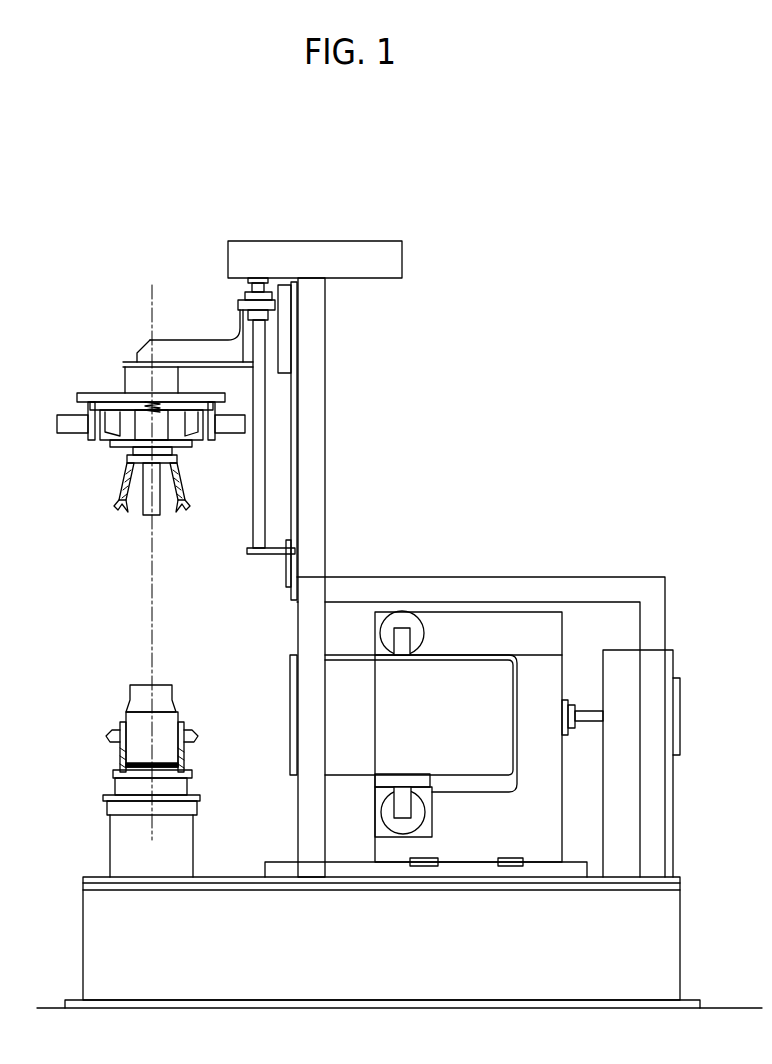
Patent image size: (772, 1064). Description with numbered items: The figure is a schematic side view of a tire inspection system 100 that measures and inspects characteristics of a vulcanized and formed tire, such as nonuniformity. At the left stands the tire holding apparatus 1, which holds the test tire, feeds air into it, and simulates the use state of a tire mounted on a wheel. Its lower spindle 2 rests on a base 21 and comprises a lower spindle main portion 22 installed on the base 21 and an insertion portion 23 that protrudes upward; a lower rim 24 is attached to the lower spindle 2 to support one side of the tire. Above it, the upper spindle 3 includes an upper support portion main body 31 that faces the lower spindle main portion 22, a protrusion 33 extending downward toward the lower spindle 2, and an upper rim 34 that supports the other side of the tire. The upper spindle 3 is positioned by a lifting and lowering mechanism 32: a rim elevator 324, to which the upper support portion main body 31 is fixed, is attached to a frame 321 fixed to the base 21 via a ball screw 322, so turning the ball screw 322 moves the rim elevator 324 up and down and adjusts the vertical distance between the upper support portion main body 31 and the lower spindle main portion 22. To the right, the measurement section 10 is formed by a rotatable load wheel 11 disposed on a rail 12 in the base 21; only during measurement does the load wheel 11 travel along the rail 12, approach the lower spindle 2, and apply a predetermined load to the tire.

The tire inspection system 100 is at (573, 428).
The tire holding apparatus 1 is at (60, 410).
The lower spindle 2 is at (157, 699).
The upper spindle 3 is at (124, 520).
The measurement section 10 is at (485, 684).
The load wheel 11 is at (482, 672).
The rail 12 is at (286, 860).
The base 21 is at (105, 904).
The lower spindle main portion 22 is at (188, 786).
The insertion portion 23 is at (165, 720).
The lower rim 24 is at (110, 740).
The upper support portion main body 31 is at (168, 451).
The lifting and lowering mechanism 32 is at (192, 429).
The protrusion 33 is at (142, 508).
The upper rim 34 is at (124, 486).
The frame 321 is at (326, 427).
The ball screw 322 is at (280, 528).
The rim elevator 324 is at (185, 340).